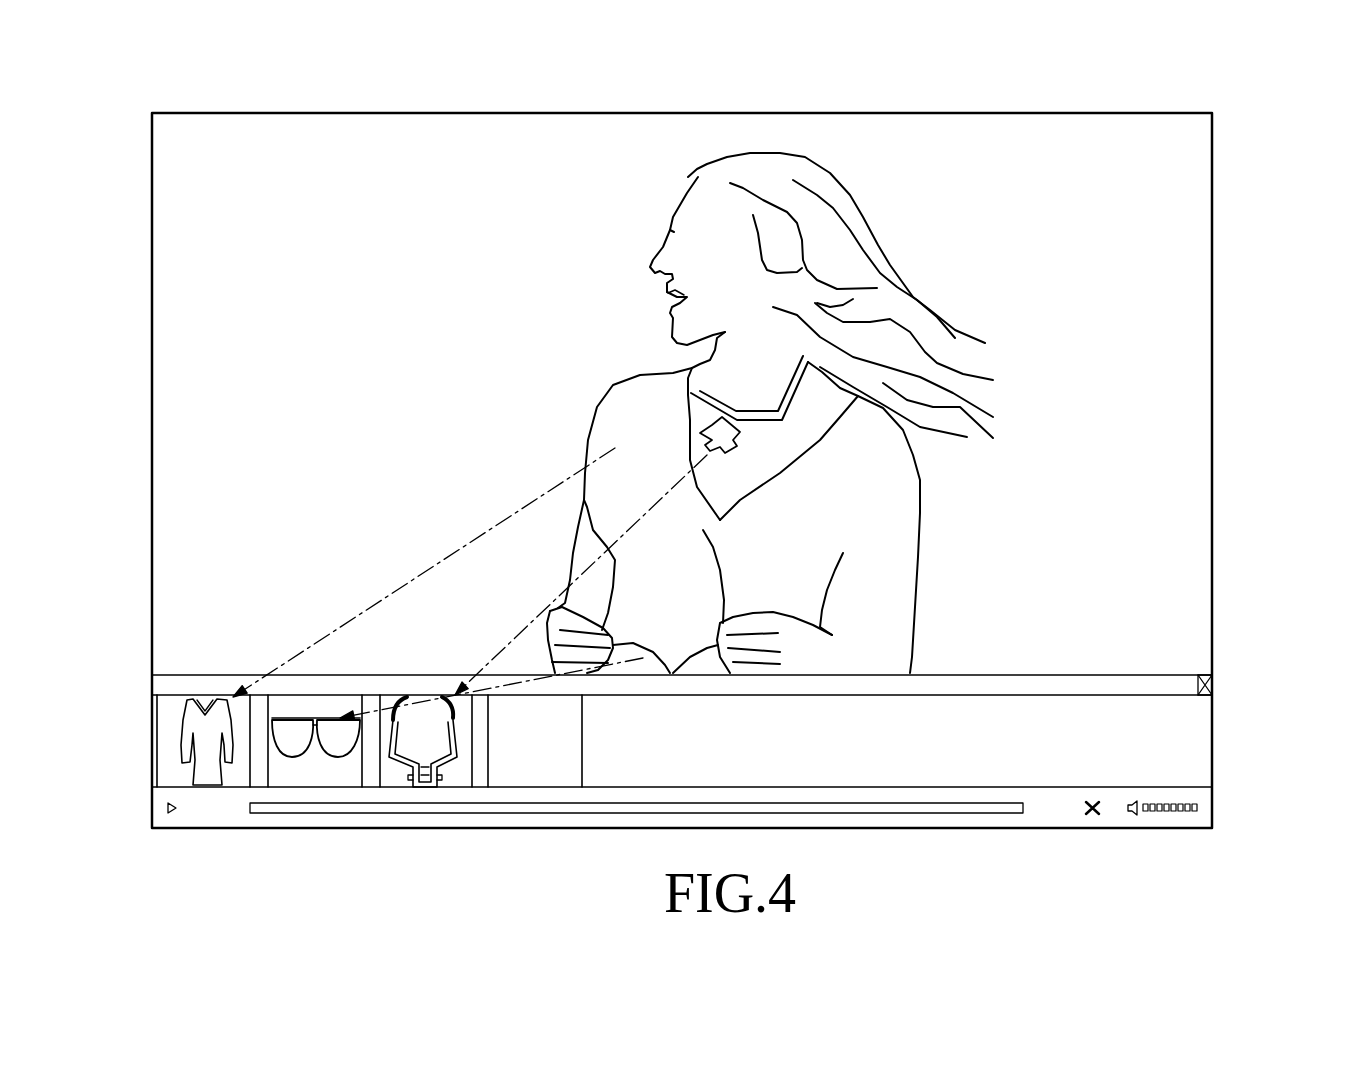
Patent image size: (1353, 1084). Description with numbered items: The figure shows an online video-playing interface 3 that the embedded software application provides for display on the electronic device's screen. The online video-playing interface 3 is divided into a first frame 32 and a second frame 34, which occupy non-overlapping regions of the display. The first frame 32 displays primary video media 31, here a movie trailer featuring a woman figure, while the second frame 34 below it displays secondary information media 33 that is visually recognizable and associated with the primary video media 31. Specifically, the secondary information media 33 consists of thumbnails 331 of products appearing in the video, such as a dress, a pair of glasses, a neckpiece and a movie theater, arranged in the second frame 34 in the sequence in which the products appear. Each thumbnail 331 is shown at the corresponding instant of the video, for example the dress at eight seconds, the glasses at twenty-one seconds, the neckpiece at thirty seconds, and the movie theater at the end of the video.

The online video-playing interface 3 is at (1214, 257).
The primary video media 31 is at (175, 322).
The first frame 32 is at (1213, 407).
The secondary information media 33 is at (344, 752).
The thumbnail 331 is at (407, 705).
The second frame 34 is at (1213, 737).